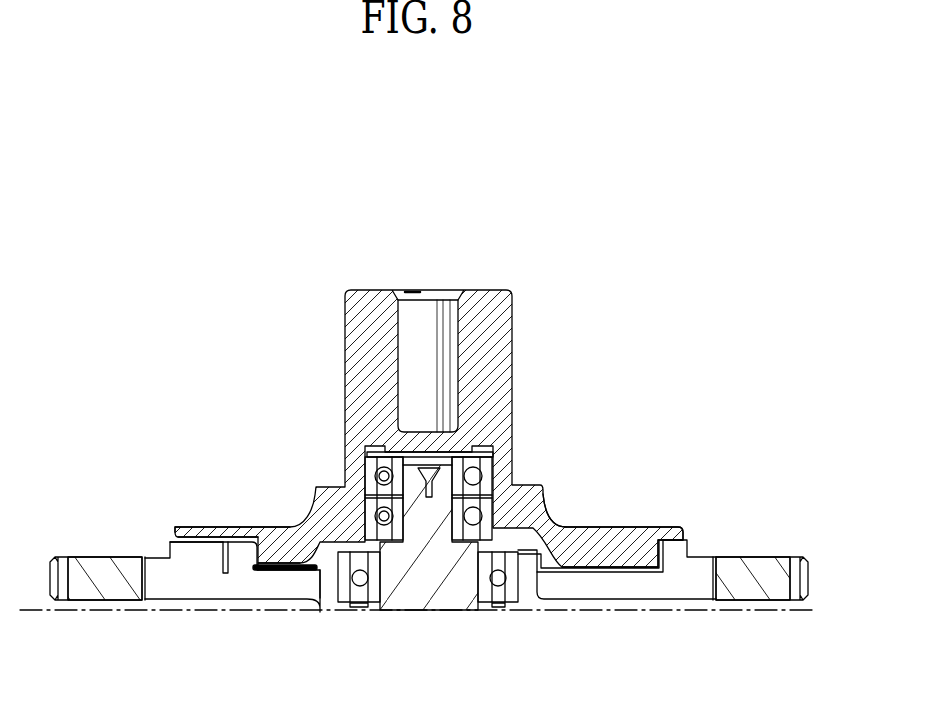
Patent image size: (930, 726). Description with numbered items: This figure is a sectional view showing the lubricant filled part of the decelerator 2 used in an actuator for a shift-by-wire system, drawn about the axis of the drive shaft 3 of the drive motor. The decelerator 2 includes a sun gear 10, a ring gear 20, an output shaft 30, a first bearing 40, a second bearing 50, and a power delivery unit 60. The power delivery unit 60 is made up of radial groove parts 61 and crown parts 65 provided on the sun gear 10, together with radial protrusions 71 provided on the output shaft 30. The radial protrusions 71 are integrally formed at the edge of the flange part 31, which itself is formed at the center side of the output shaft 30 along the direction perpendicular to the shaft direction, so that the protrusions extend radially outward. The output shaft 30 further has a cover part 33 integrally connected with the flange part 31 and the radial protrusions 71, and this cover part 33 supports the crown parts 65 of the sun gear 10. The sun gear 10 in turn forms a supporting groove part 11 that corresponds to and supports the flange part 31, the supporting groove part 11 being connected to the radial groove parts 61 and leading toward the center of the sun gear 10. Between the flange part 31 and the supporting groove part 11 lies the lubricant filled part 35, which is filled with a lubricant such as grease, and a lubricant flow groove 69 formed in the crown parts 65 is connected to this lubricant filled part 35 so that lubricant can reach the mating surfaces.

The decelerator 2 is at (417, 216).
The drive shaft 3 is at (427, 621).
The sun gear 10 is at (430, 571).
The supporting groove part 11 is at (293, 572).
The ring gear 20 is at (758, 570).
The output shaft 30 is at (538, 420).
The flange part 31 is at (277, 568).
The cover part 33 is at (213, 532).
The lubricant filled part 35 is at (305, 568).
The first bearing 40 is at (526, 599).
The second bearing 50 is at (352, 488).
The power delivery unit 60 is at (621, 580).
The radial groove parts 61 is at (643, 533).
The crown parts 65 is at (198, 555).
The lubricant flow groove 69 is at (225, 558).
The radial protrusions 71 is at (568, 528).